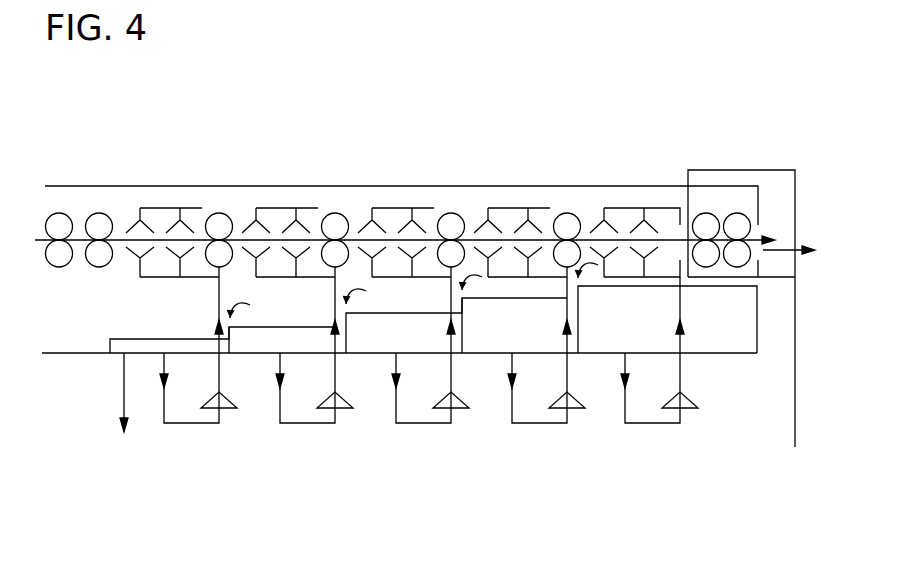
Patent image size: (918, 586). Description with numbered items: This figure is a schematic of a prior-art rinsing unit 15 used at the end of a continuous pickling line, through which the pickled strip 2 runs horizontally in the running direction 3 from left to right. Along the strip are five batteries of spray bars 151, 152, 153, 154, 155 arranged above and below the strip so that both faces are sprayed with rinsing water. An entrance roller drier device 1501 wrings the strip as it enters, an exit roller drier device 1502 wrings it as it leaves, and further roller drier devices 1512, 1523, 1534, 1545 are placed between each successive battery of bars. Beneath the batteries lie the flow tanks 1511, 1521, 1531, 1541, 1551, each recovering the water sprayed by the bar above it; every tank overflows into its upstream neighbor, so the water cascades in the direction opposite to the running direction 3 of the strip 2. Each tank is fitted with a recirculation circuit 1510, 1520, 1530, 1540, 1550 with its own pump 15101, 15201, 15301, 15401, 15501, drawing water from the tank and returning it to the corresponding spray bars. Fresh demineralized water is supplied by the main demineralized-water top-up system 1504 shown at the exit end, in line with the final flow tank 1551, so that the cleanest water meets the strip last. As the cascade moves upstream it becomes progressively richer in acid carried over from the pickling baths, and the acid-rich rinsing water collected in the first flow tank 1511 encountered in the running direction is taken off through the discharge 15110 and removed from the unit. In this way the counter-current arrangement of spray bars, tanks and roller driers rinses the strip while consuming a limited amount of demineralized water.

The strip 2 is at (39, 230).
The running direction 3 is at (789, 241).
The rinsing unit 15 is at (102, 184).
The first spray bar battery 151 is at (172, 216).
The second spray bar battery 152 is at (290, 216).
The third spray bar battery 153 is at (405, 216).
The fourth spray bar battery 154 is at (520, 216).
The fifth spray bar battery 155 is at (628, 216).
The entrance roller drier device 1501 is at (59, 268).
The exit roller drier device 1502 is at (737, 216).
The main demineralized-water top-up system 1504 is at (792, 428).
The roller drier device 1512 is at (227, 216).
The roller drier device 1523 is at (341, 216).
The roller drier device 1534 is at (458, 216).
The roller drier device 1545 is at (574, 215).
The recirculation circuit 1510 is at (168, 427).
The first flow tank 1511 is at (153, 347).
The drain 15110 is at (120, 405).
The pump 15101 is at (228, 409).
The recirculation circuit 1520 is at (320, 428).
The second flow tank 1521 is at (260, 344).
The pump 15201 is at (343, 409).
The recirculation circuit 1530 is at (435, 426).
The third flow tank 1531 is at (395, 334).
The pump 15301 is at (458, 409).
The recirculation circuit 1540 is at (552, 426).
The fourth flow tank 1541 is at (515, 323).
The pump 15401 is at (575, 409).
The fifth tank 1550 is at (653, 426).
The final flow tank 1551 is at (708, 330).
The pump 15501 is at (690, 409).